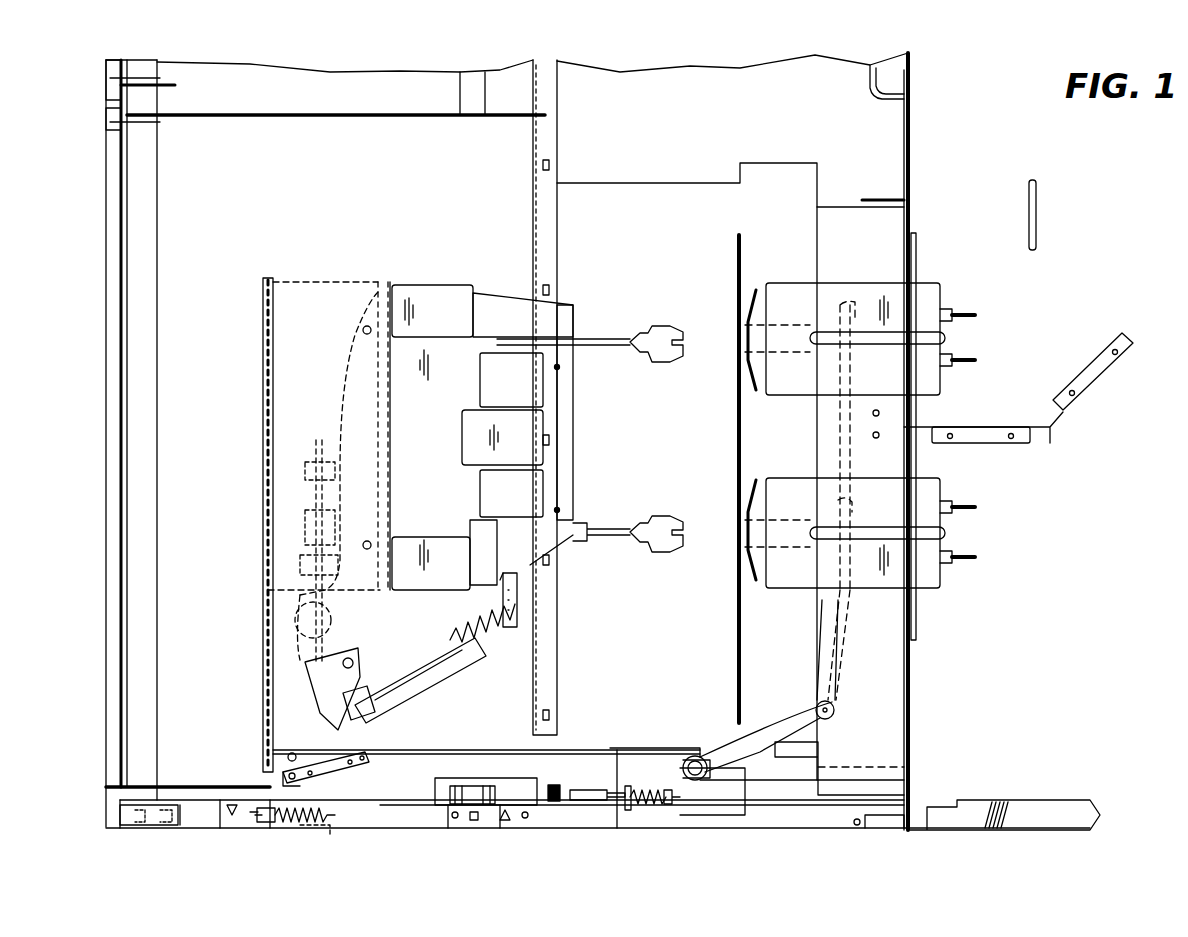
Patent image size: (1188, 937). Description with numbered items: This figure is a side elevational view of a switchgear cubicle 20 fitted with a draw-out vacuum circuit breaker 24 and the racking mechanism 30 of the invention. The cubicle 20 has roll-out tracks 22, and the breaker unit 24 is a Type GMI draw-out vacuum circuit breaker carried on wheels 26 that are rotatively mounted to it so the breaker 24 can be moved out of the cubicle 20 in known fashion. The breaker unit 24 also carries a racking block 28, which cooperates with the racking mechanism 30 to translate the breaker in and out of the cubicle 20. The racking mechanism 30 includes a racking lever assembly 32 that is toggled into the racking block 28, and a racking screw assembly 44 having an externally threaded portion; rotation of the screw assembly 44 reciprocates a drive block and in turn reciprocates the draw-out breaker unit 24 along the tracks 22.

The cubicle 20 is at (928, 157).
The roll-out tracks 22 is at (823, 820).
The draw-out vacuum circuit breaker 24 is at (330, 262).
The wheels 26 is at (323, 833).
The racking block 28 is at (290, 752).
The racking mechanism 30 is at (556, 777).
The racking lever assembly 32 is at (335, 768).
The racking screw assembly 44 is at (430, 795).